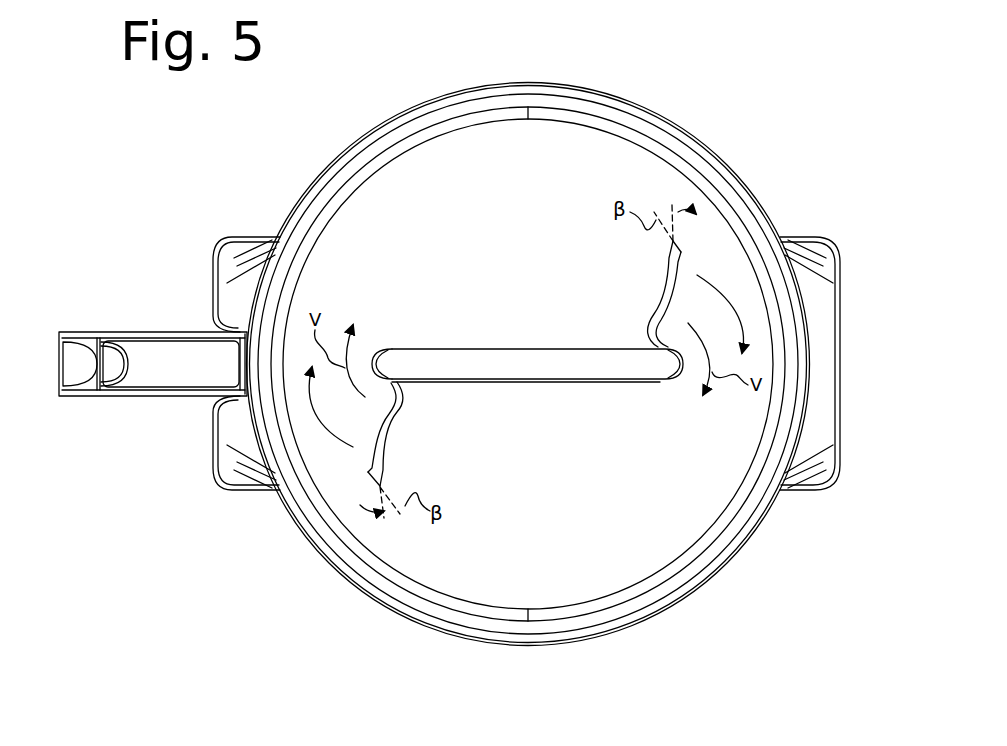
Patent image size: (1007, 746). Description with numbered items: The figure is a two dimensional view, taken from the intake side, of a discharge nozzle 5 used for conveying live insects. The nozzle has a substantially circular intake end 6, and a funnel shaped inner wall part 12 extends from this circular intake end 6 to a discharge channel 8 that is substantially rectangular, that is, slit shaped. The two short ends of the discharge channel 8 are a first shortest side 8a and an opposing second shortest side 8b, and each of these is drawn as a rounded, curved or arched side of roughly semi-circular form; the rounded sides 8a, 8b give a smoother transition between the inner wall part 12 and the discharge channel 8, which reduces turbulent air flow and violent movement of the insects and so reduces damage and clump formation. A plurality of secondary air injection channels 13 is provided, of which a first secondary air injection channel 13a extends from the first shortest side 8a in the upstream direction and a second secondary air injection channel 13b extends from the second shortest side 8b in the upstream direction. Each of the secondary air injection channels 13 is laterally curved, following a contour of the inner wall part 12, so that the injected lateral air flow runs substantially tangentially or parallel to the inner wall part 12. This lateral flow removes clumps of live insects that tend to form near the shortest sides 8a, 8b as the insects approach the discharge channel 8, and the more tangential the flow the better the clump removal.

The discharge nozzle 5 is at (773, 100).
The intake end 6 is at (407, 620).
The discharge channel 8 is at (527, 371).
The first shortest side 8a is at (662, 382).
The second shortest side 8b is at (388, 352).
The inner wall part 12 is at (672, 535).
The secondary air injection channels 13 is at (456, 400).
The first secondary air injection channel 13a is at (672, 290).
The second secondary air injection channel 13b is at (385, 436).